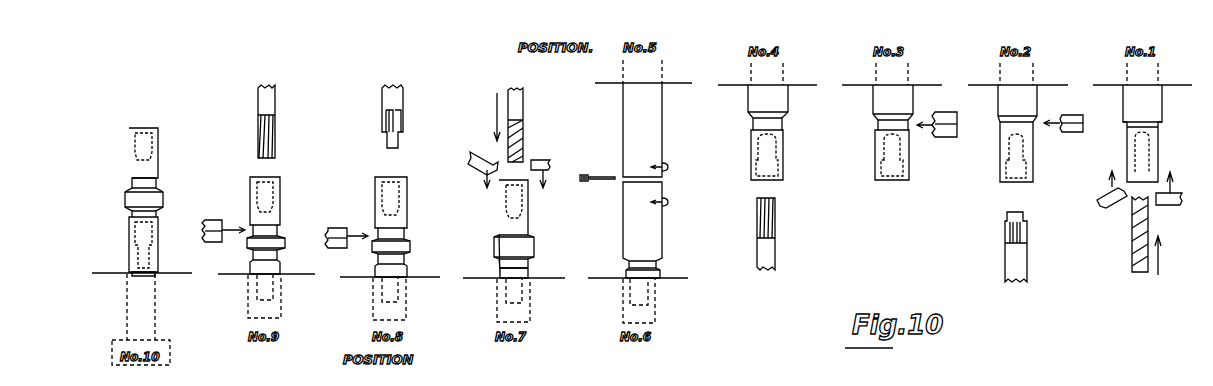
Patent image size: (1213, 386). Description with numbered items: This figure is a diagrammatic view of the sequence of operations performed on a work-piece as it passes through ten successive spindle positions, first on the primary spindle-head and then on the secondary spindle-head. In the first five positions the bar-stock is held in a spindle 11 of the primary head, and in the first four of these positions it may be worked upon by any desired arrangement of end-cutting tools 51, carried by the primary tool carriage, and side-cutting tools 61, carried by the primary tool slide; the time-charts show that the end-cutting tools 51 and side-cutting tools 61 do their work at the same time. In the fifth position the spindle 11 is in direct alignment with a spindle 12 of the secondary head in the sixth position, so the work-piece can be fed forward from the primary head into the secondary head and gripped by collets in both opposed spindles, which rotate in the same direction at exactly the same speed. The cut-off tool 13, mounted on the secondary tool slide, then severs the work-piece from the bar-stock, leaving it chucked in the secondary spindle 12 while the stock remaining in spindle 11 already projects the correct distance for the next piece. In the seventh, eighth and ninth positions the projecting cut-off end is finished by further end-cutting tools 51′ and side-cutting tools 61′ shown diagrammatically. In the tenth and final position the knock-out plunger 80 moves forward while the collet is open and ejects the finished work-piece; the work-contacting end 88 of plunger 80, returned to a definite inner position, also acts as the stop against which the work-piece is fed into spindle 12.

The spindle 11 is at (672, 83).
The spindle 12 is at (106, 273).
The cut-off tool 13 is at (604, 176).
The end-cutting tool 51 is at (775, 232).
The tool 51′ is at (272, 103).
The side-cutting tool 61 is at (950, 137).
The cutting tool 61′ is at (210, 220).
The knock-out plunger 80 is at (155, 317).
The work-contacting end 88 is at (133, 276).